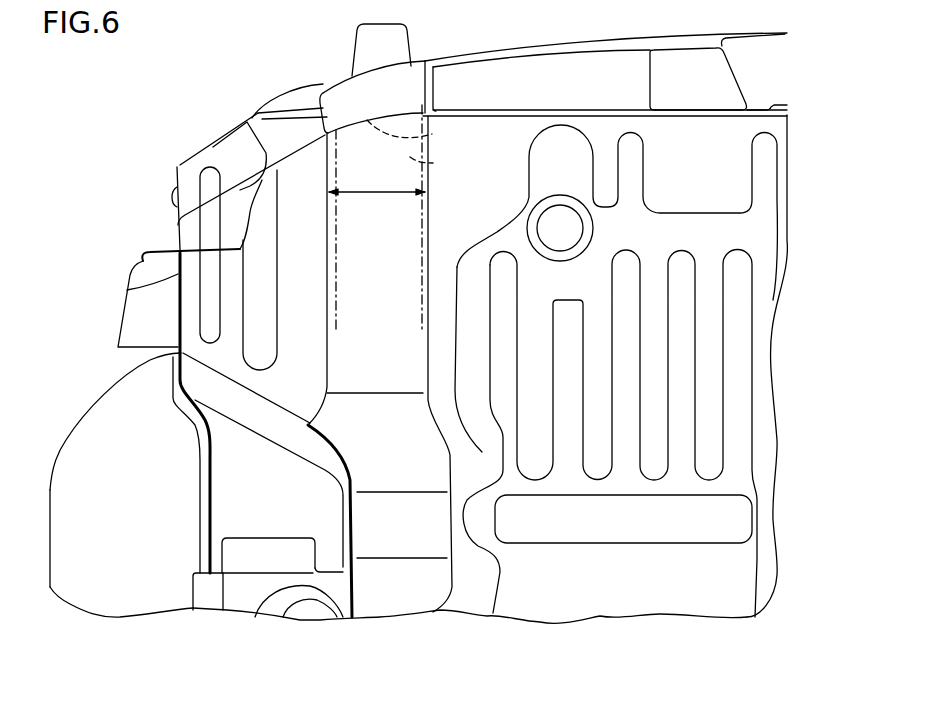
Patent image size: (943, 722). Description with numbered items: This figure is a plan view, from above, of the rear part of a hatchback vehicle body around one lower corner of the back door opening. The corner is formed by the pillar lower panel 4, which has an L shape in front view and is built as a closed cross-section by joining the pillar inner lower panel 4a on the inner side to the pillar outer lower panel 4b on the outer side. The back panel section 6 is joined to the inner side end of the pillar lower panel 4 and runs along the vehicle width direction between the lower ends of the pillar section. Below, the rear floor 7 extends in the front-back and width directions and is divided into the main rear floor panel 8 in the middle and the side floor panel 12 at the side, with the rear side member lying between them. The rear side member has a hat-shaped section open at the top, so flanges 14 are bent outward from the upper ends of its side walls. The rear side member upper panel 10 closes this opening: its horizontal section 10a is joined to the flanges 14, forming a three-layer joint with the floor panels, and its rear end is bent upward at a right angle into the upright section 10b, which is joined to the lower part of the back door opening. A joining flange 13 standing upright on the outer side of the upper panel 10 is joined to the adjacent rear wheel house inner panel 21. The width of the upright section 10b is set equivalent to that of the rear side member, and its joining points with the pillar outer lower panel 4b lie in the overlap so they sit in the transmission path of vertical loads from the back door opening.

The pillar lower panel 4 is at (345, 80).
The pillar inner lower panel 4a is at (403, 100).
The pillar outer lower panel 4b is at (280, 96).
The back panel section 6 is at (624, 67).
The rear floor 7 is at (780, 574).
The main rear floor panel 8 is at (737, 400).
The rear side member upper panel 10 is at (432, 220).
The horizontal section 10a is at (363, 290).
The upright section 10b is at (432, 134).
The side floor panel 12 is at (233, 315).
The joining flange 13 is at (340, 455).
The flange 14 is at (433, 163).
The rear wheel house inner panel 21 is at (230, 490).